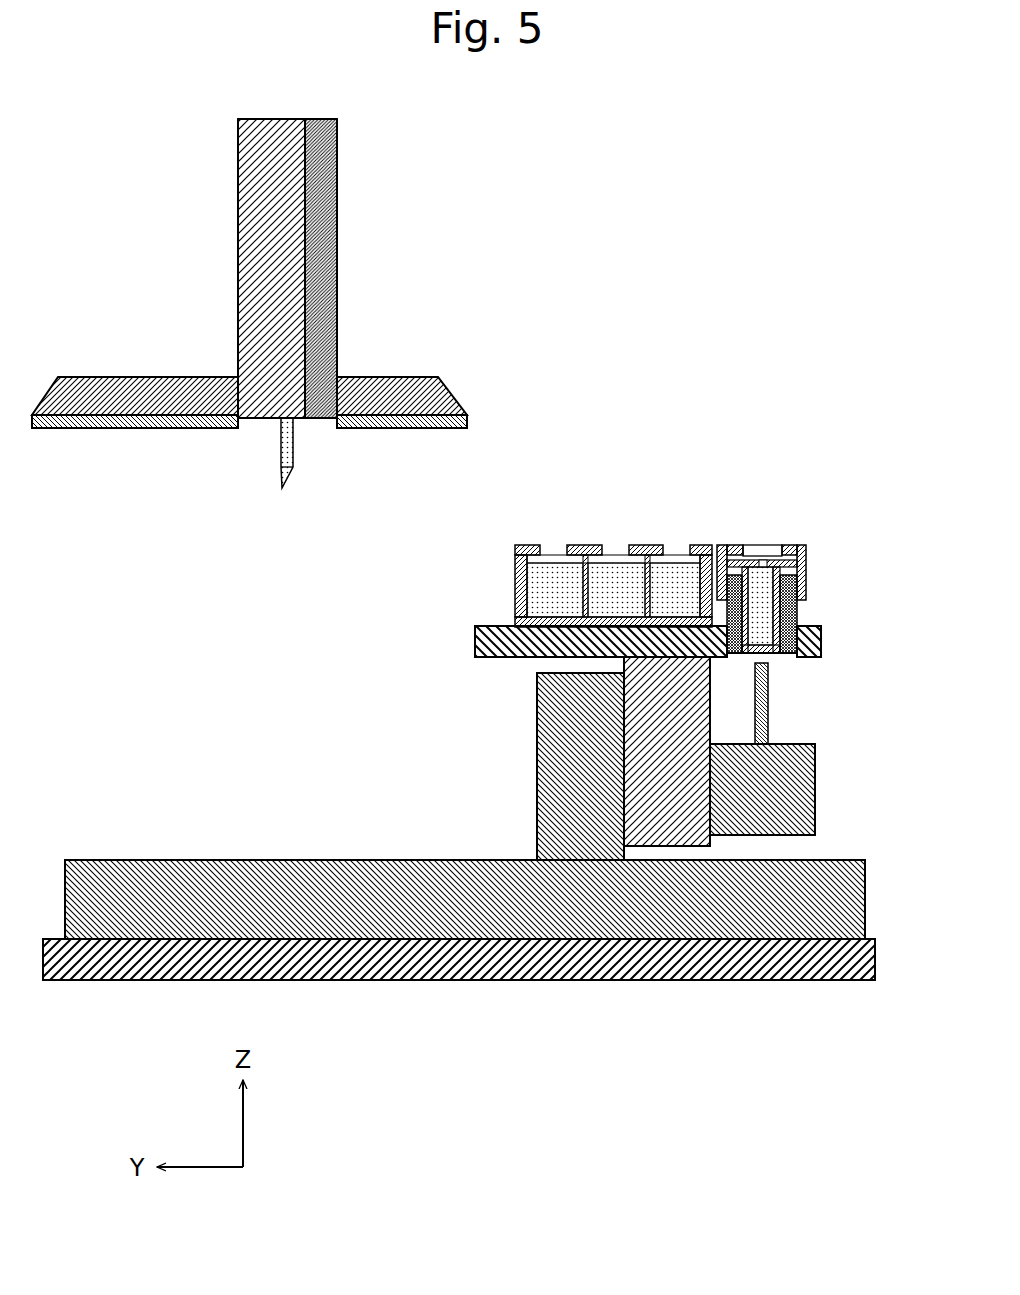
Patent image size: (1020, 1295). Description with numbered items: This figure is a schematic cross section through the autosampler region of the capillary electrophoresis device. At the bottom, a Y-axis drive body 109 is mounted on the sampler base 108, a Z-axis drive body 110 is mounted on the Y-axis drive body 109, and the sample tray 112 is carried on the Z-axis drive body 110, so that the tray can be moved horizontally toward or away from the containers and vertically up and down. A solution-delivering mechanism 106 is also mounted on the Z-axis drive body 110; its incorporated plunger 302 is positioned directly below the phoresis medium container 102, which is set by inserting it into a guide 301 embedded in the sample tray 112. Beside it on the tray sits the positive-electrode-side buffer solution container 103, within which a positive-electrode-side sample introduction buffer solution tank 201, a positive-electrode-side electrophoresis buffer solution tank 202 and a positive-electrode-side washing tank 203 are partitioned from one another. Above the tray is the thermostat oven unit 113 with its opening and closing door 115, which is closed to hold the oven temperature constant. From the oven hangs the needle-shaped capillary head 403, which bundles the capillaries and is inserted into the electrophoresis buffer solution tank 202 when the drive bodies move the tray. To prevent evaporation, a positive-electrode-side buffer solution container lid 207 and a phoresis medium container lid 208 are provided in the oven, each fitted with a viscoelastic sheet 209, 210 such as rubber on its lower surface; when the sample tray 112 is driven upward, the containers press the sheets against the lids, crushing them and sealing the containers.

The thermostat oven unit 113 is at (238, 212).
The opening and closing door 115 is at (337, 197).
The positive-electrode-side buffer solution container lid 207 is at (147, 377).
The phoresis medium container lid 208 is at (415, 377).
The viscoelastic sheet 209 is at (100, 428).
The viscoelastic sheet 210 is at (410, 428).
The capillary head 403 is at (277, 452).
The positive-electrode-side buffer solution container 103 is at (569, 554).
The positive-electrode-side sample introduction buffer solution tank 201 is at (547, 567).
The positive-electrode-side electrophoresis buffer solution tank 202 is at (608, 567).
The positive-electrode-side washing tank 203 is at (673, 567).
The phoresis medium container 102 is at (818, 588).
The guide 301 is at (800, 612).
The plunger 302 is at (768, 705).
The sample tray 112 is at (475, 637).
The Z-axis drive body 110 is at (630, 715).
The Y-axis drive body 109 is at (537, 826).
The solution-delivering mechanism 106 is at (815, 772).
The sampler base 108 is at (522, 982).